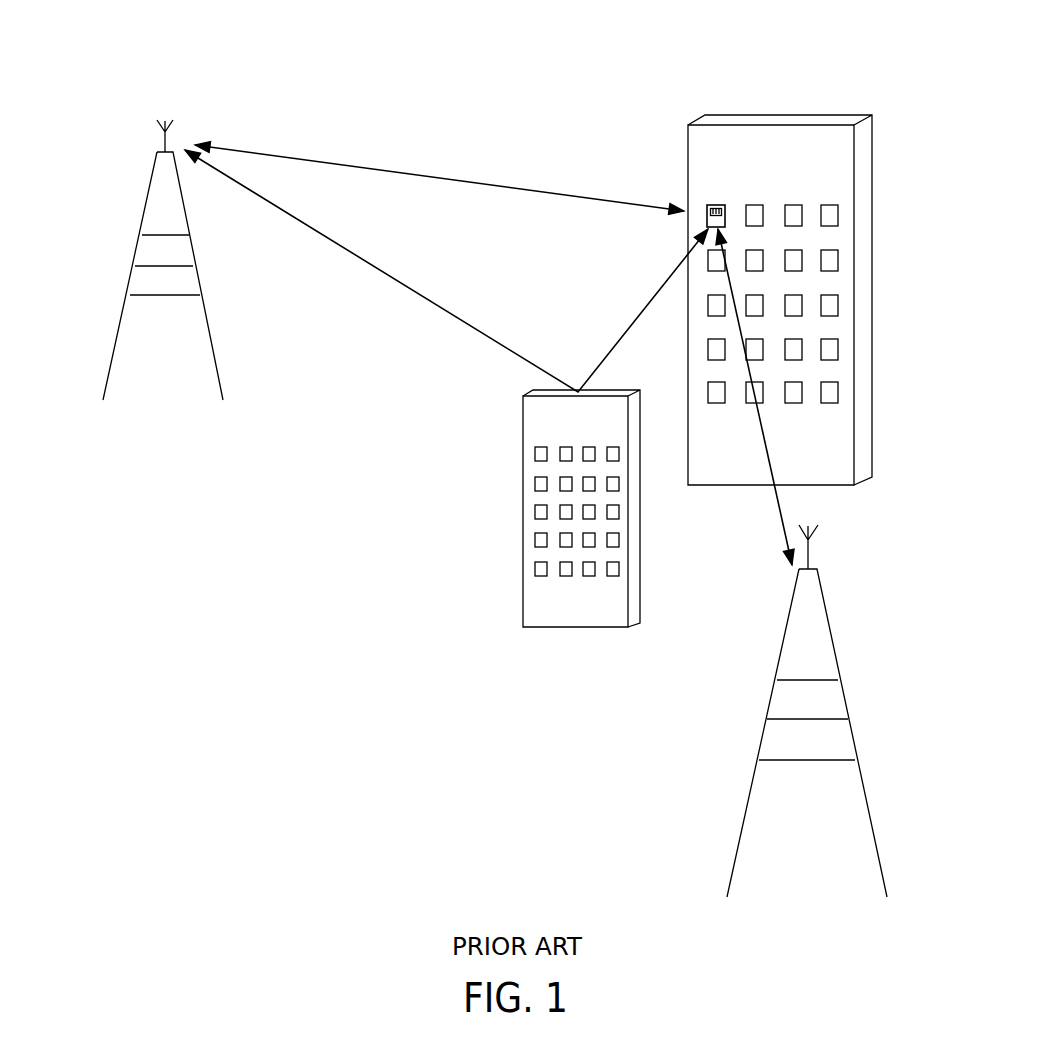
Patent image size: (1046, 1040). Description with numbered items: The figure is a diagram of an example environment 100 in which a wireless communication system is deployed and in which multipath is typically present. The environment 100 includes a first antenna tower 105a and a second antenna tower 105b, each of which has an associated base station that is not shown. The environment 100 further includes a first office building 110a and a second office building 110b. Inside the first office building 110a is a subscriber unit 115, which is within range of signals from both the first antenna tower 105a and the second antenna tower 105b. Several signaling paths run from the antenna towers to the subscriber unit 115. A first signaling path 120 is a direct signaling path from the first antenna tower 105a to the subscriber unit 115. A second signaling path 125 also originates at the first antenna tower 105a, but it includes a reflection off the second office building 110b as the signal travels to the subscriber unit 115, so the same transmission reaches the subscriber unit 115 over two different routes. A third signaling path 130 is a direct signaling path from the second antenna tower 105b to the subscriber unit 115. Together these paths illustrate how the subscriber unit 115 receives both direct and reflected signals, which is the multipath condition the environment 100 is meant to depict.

The environment 100 is at (683, 54).
The first antenna tower 105a is at (130, 146).
The second antenna tower 105b is at (841, 566).
The first office building 110a is at (830, 117).
The second office building 110b is at (625, 389).
The subscriber unit 115 is at (716, 203).
The first signaling path 120 is at (387, 169).
The second signaling path 125 is at (340, 244).
The third signaling path 130 is at (781, 513).